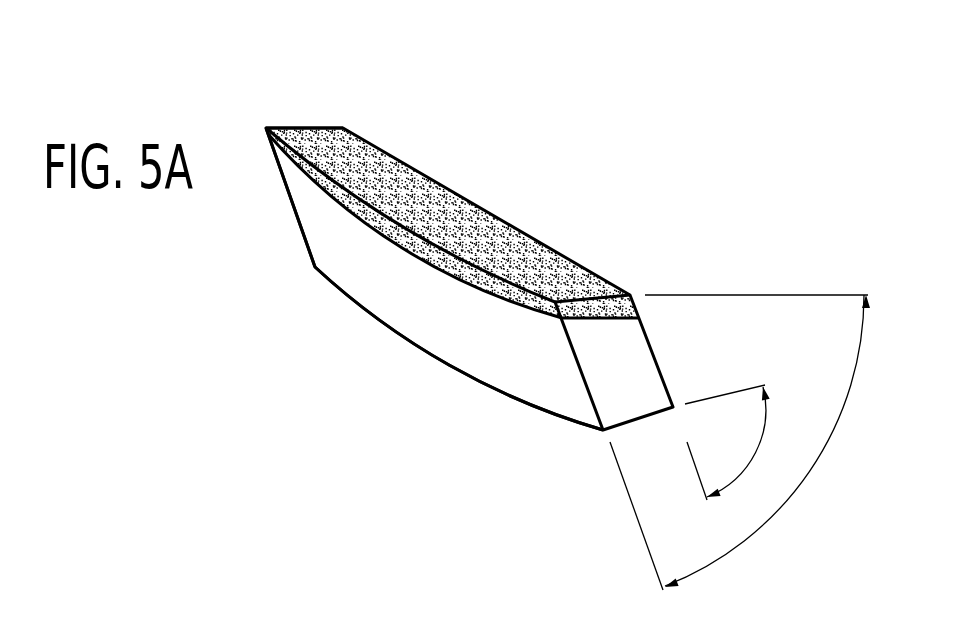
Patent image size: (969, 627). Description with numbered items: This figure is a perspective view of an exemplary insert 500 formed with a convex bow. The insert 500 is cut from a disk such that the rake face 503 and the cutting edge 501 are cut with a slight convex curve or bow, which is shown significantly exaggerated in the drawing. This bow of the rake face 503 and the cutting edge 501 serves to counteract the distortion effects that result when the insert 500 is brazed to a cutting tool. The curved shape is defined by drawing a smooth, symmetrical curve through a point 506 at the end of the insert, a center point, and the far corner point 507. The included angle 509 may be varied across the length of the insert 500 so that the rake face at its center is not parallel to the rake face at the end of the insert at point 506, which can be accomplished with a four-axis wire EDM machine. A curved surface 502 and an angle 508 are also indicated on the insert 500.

The insert 500 is at (470, 77).
The cutting edge 501 is at (465, 252).
The front curved surface 502 is at (387, 328).
The rake face 503 is at (357, 265).
The point 506 is at (553, 303).
The far corner point 507 is at (266, 128).
The end face angle 508 is at (731, 442).
The included angle 509 is at (740, 442).